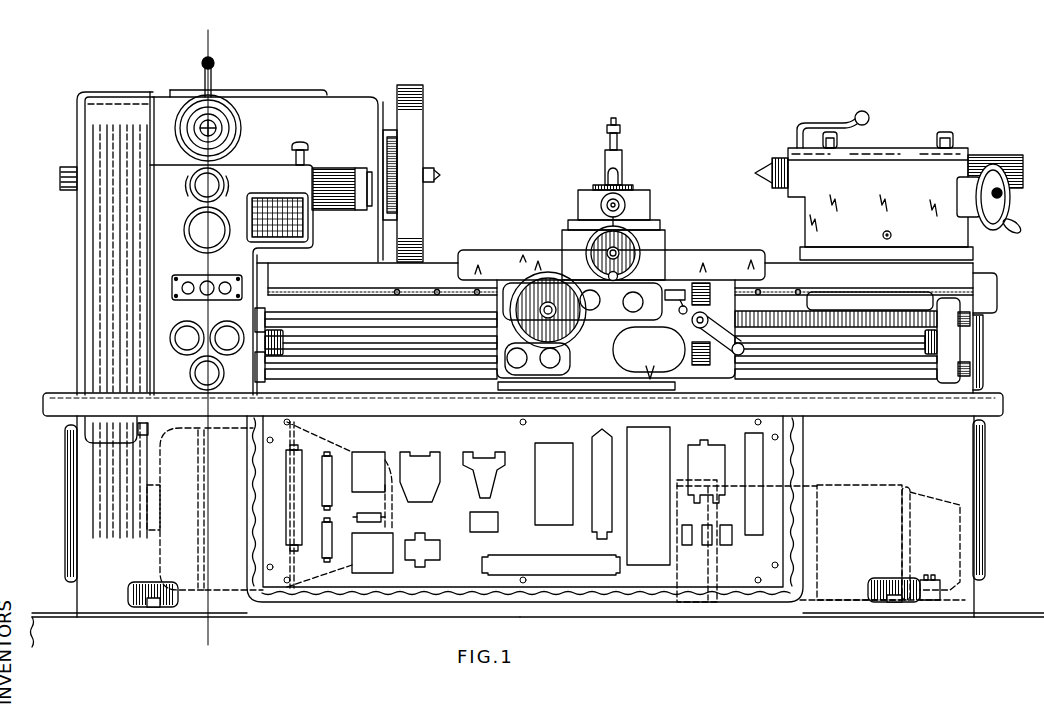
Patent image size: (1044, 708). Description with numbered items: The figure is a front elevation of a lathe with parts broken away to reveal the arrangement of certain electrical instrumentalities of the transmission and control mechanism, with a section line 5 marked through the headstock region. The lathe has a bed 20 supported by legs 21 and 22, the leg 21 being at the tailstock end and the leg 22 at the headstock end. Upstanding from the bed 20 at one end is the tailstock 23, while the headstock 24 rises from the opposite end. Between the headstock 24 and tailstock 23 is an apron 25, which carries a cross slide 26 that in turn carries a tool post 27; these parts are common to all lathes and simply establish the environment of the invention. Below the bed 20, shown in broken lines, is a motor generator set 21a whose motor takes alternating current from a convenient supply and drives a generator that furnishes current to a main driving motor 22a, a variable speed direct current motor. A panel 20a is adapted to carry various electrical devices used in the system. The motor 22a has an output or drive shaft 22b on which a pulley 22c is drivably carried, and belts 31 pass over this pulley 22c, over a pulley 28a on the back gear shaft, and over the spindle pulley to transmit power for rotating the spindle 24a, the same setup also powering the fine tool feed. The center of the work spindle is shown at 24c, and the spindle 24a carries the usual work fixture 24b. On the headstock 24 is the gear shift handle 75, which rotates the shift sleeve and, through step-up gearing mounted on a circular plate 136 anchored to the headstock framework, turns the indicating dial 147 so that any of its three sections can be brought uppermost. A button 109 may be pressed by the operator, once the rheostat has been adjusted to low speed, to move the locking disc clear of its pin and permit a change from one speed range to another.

The section line 5- 5 is at (173, 38).
The bed 20 is at (963, 388).
The panel 20a is at (628, 580).
The leg 21 is at (968, 596).
The motor generator set 21a is at (870, 492).
The leg 22 is at (80, 604).
The main driving motor 22a is at (228, 583).
The output or drive shaft 22b is at (157, 531).
The pulley 22c is at (92, 492).
The tailstock 23 is at (895, 157).
The headstock 24 is at (347, 97).
The spindle 24a is at (66, 189).
The work fixture 24b is at (420, 97).
The center of the work spindle 24c is at (438, 174).
The apron 25 is at (588, 343).
The cross slide 26 is at (666, 234).
The tool post 27 is at (623, 154).
The pulley 28a is at (92, 140).
The belts 31 is at (113, 337).
The gear shift handle 75 is at (213, 76).
The button 109 is at (213, 131).
The circular plate 136 is at (183, 108).
The dial 147 is at (226, 118).